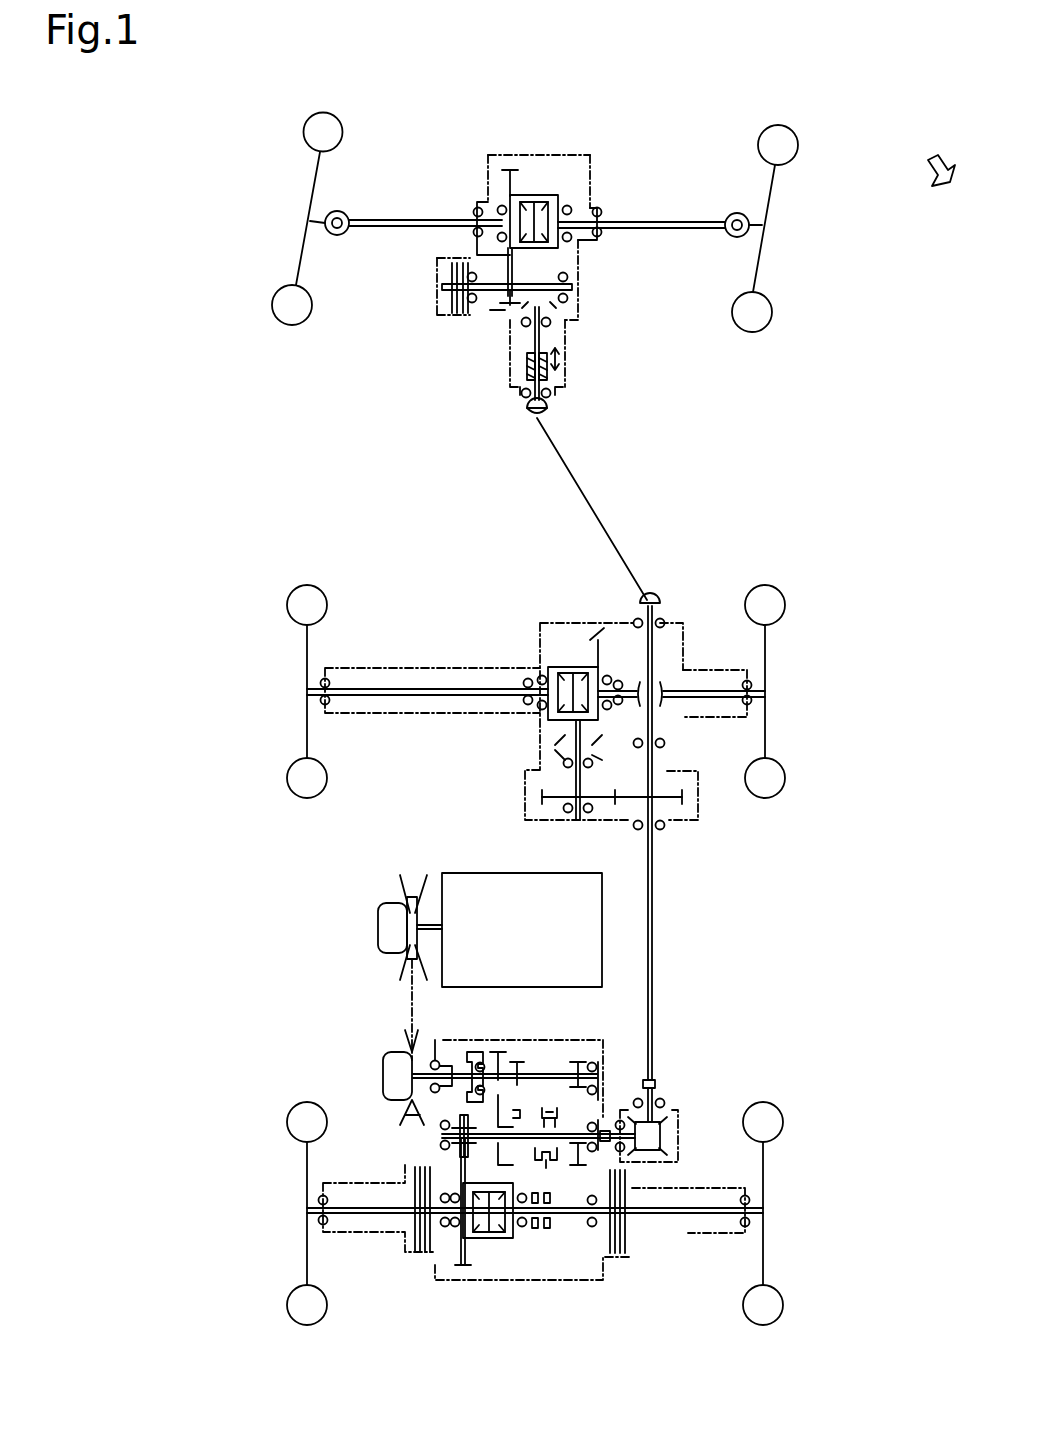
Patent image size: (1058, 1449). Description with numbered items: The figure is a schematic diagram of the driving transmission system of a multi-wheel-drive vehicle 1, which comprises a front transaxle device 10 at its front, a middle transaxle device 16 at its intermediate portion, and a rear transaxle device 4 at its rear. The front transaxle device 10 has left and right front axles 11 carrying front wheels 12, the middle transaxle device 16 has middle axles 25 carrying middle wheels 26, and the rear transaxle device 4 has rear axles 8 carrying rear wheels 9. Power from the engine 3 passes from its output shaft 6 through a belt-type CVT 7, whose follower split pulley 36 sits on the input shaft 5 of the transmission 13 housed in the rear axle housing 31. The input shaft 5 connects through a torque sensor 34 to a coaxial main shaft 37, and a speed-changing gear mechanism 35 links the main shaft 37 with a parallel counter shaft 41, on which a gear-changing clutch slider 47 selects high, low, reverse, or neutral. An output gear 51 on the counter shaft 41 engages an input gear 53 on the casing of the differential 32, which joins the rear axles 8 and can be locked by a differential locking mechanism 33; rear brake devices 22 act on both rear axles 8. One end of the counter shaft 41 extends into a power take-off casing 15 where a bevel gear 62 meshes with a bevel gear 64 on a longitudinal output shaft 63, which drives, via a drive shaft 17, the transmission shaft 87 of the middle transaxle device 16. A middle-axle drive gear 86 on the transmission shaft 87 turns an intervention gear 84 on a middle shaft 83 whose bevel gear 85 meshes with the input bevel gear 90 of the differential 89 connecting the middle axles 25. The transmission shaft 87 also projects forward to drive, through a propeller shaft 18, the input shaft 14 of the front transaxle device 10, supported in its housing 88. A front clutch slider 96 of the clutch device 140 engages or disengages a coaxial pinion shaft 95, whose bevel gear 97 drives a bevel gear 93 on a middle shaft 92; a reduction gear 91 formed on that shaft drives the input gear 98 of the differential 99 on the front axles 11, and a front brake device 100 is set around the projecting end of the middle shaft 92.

The multi-wheel-drive vehicle 1 is at (943, 155).
The engine 3 is at (540, 946).
The rear transaxle device 4 is at (630, 1310).
The input shaft 5 is at (440, 1060).
The output shaft 6 is at (430, 895).
The belt-type automatically continuous variable transmission 7 is at (380, 1002).
The rear axle 8 is at (360, 1215).
The rear wheel 9 is at (320, 1300).
The front transaxle device 10 is at (628, 165).
The front axle 11 is at (410, 218).
The front wheel 12 is at (335, 130).
The transmission 13 is at (614, 1047).
The input shaft 14 is at (552, 405).
The power take-off casing 15 is at (678, 1132).
The middle transaxle device 16 is at (683, 578).
The drive shaft 17 is at (654, 945).
The propeller shaft 18 is at (595, 505).
The rear brake device 22 is at (408, 1192).
The middle axle 25 is at (413, 688).
The middle wheel 26 is at (320, 778).
The rear axle housing 31 is at (578, 1038).
The differential 32 is at (483, 1243).
The differential locking mechanism 33 is at (538, 1243).
The torque sensor 34 is at (488, 1043).
The speed-changing gear mechanism 35 is at (548, 1092).
The follower split pulley 36 is at (400, 1110).
The main shaft 37 is at (535, 1060).
The counter shaft 41 is at (580, 1170).
The gear-changing clutch slider 47 is at (600, 1105).
The output gear 51 is at (445, 1125).
The input gear 53 is at (467, 1282).
The bevel gear 62 is at (610, 1140).
The output shaft 63 is at (660, 1085).
The bevel gear 64 is at (660, 1135).
The middle shaft 83 is at (578, 820).
The intervention gear 84 is at (602, 808).
The bevel gear 85 is at (552, 750).
The middle-axle drive gear 86 is at (690, 797).
The transmission shaft 87 is at (652, 720).
The housing 88 is at (488, 182).
The differential 89 is at (560, 650).
The input bevel gear 90 is at (595, 645).
The reduction gear 91 is at (503, 273).
The middle shaft 92 is at (580, 286).
The bevel gear 93 is at (560, 270).
The pinion shaft 95 is at (540, 345).
The front clutch slider 96 is at (527, 366).
The bevel gear 97 is at (500, 318).
The input gear 98 is at (513, 168).
The differential 99 is at (542, 193).
The front brake device 100 is at (437, 312).
The clutch device 140 is at (603, 372).